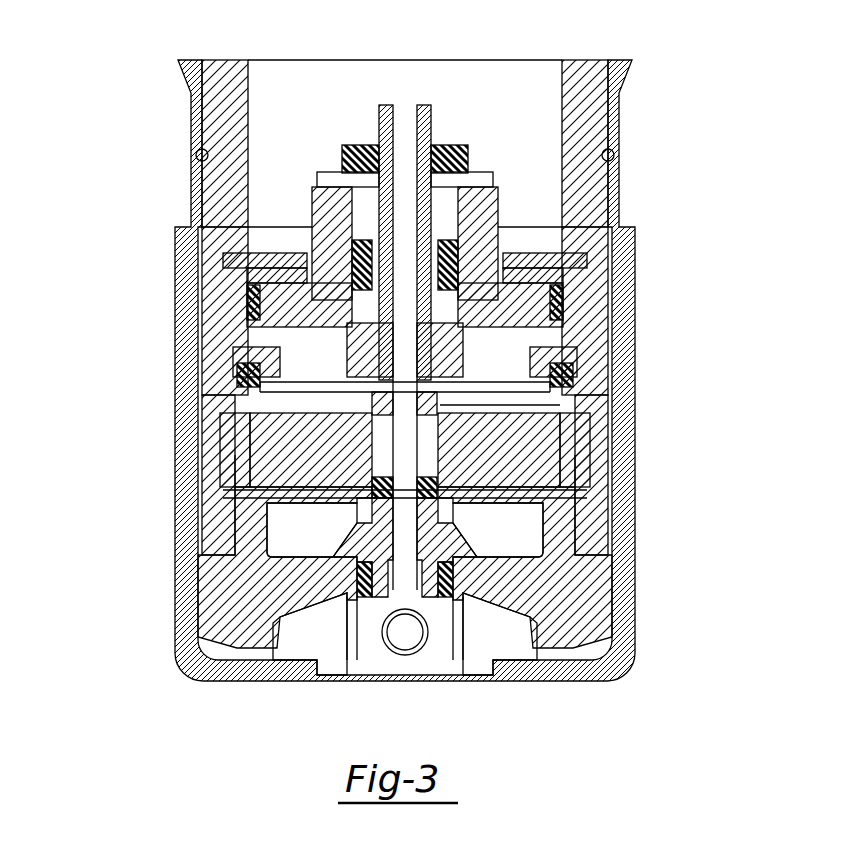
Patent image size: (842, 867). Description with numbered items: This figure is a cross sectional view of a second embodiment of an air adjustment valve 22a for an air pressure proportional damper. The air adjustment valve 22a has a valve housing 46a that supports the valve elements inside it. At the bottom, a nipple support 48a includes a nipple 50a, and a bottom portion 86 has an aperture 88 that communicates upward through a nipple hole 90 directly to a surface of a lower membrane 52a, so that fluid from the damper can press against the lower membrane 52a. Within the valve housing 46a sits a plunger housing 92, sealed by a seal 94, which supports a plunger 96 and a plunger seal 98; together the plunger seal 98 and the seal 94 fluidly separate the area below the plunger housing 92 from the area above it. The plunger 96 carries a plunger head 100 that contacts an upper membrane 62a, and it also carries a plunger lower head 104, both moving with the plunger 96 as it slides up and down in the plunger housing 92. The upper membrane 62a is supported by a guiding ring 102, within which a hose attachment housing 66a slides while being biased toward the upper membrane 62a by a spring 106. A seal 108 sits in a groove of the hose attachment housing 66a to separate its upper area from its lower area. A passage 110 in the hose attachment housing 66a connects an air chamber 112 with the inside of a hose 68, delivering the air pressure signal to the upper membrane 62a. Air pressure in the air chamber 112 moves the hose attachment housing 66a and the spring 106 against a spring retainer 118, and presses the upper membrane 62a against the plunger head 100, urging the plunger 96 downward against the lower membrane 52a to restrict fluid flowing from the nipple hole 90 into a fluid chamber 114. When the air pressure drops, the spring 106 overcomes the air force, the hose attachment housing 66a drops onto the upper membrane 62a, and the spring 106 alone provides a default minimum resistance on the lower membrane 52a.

The air adjustment valve 22a is at (683, 103).
The valve housing 46a is at (638, 396).
The nipple support 48a is at (587, 582).
The nipple 50a is at (585, 538).
The lower membrane 52a is at (580, 443).
The upper membrane 62a is at (580, 357).
The hose attachment housing 66a is at (490, 208).
The hose 68 is at (433, 125).
The bottom portion 86 is at (333, 663).
The aperture 88 is at (430, 670).
The nipple hole 90 is at (483, 560).
The plunger housing 92 is at (247, 443).
The seal 94 is at (607, 478).
The plunger 96 is at (560, 410).
The plunger seal 98 is at (443, 427).
The plunger head 100 is at (320, 402).
The guiding ring 102 is at (590, 287).
The plunger lower head 104 is at (370, 485).
The spring 106 is at (600, 263).
The seal 108 is at (593, 293).
The passage 110 is at (348, 343).
The air chamber 112 is at (307, 355).
The fluid chamber 114 is at (280, 535).
The spring retainer 118 is at (617, 257).